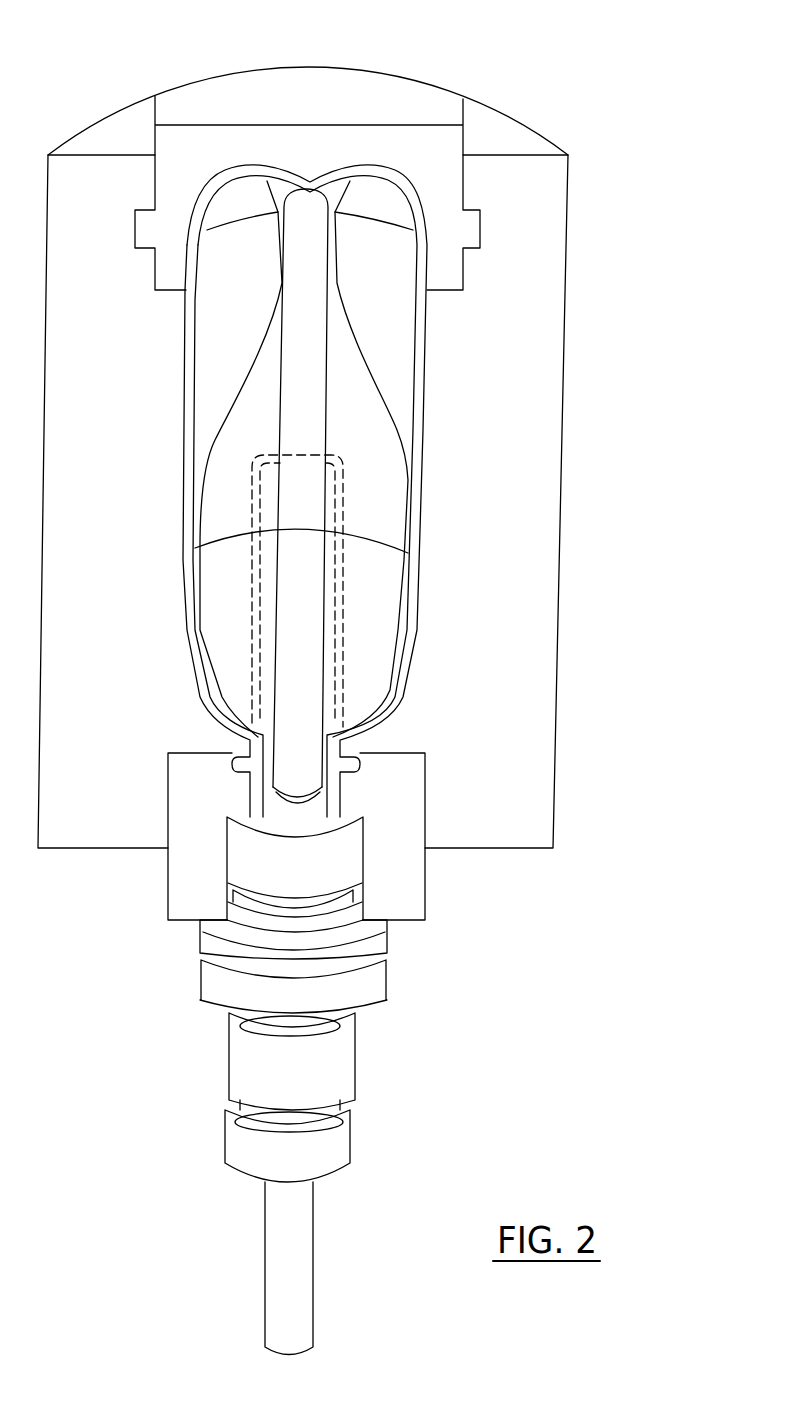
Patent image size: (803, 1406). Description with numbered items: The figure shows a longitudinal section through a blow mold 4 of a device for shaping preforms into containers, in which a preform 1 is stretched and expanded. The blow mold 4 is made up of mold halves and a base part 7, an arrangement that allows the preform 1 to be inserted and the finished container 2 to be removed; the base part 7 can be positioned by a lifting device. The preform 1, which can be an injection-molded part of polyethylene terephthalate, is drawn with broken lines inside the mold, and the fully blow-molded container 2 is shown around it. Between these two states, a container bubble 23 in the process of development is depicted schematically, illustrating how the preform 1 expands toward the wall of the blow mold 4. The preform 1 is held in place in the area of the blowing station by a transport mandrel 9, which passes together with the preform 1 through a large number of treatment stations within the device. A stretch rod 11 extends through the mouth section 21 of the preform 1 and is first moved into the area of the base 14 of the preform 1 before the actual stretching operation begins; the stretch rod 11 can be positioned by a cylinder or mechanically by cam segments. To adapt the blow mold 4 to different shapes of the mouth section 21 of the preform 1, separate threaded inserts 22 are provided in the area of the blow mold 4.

The preform 1 is at (342, 630).
The container 2 is at (420, 395).
The blow mold 4 is at (523, 467).
The base part 7 is at (398, 88).
The transport mandrel 9 is at (372, 992).
The stretch rod 11 is at (260, 1278).
The base 14 is at (337, 460).
The mouth section 21 is at (342, 783).
The threaded inserts 22 is at (405, 877).
The container bubble 23 is at (357, 352).